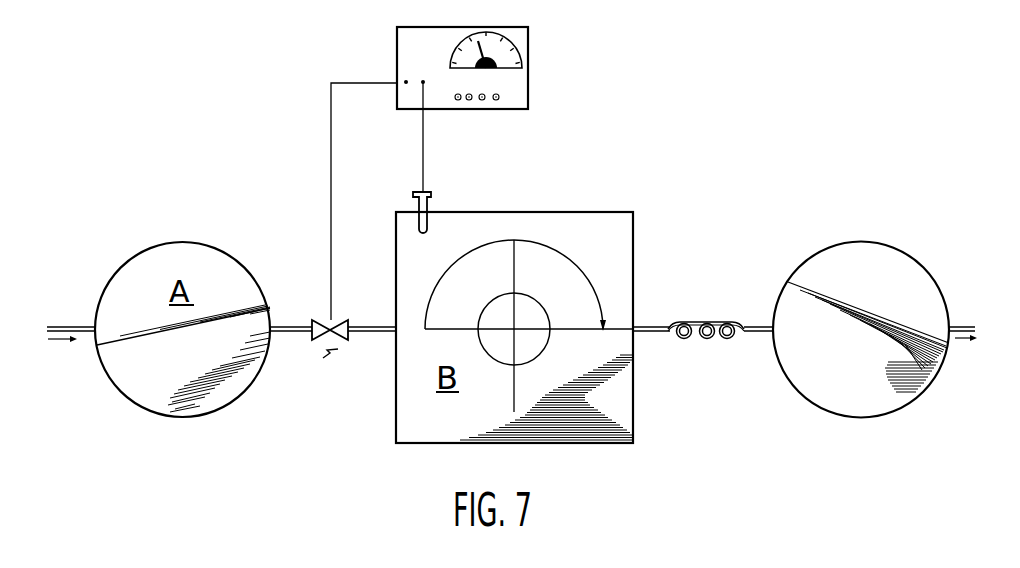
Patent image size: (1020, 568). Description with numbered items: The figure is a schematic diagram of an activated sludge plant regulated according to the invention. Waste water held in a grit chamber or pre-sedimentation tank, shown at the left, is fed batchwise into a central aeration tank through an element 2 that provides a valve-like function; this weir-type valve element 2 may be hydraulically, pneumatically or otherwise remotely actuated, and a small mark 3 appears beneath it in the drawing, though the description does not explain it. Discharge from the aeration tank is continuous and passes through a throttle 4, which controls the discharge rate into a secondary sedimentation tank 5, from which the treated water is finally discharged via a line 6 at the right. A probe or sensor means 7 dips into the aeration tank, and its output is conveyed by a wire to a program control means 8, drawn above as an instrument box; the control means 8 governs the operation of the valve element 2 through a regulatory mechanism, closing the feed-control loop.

The valve element 2 is at (341, 326).
The valve actuator 3 is at (331, 352).
The throttle means 4 is at (708, 323).
The secondary sedimentation tank 5 is at (900, 398).
The discharge line 6 is at (951, 330).
The sensor means 7 is at (431, 196).
The program control means 8 is at (521, 92).